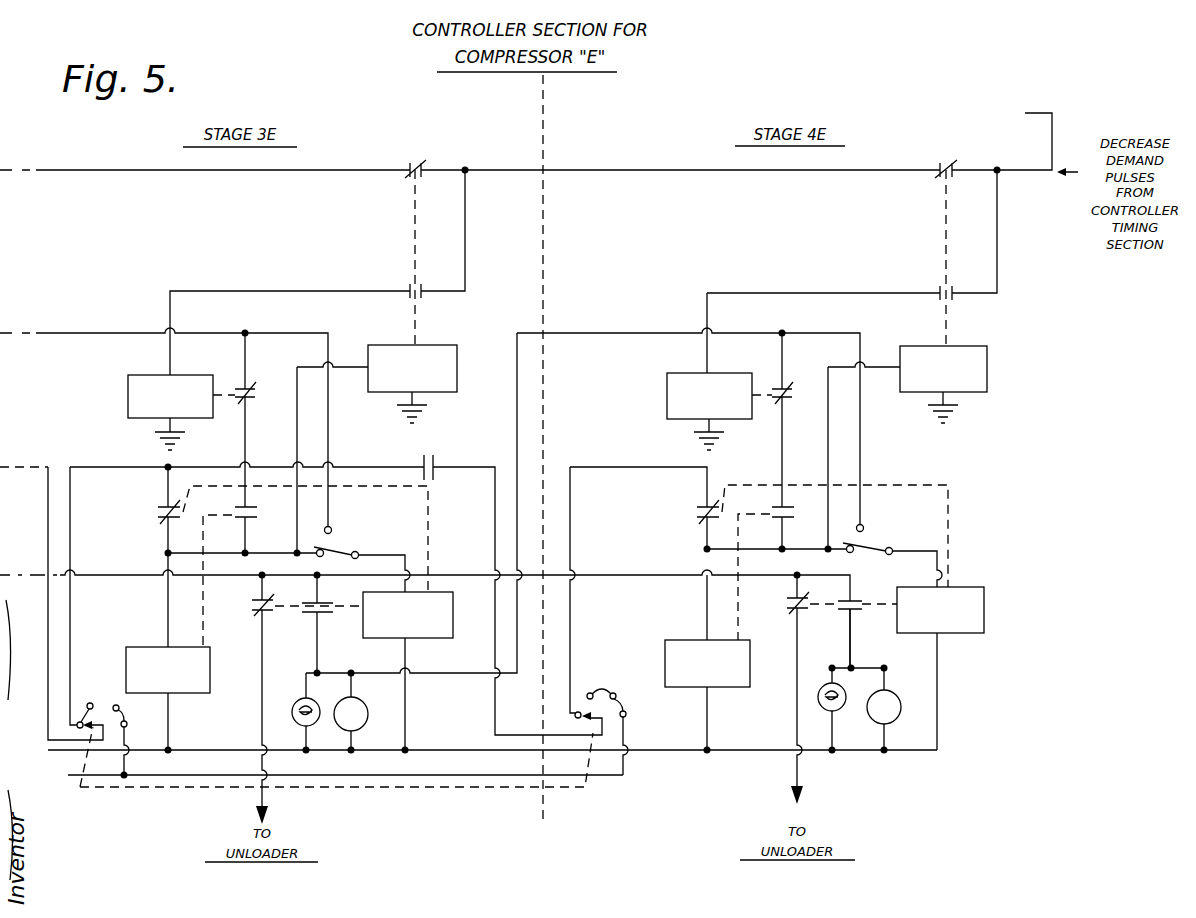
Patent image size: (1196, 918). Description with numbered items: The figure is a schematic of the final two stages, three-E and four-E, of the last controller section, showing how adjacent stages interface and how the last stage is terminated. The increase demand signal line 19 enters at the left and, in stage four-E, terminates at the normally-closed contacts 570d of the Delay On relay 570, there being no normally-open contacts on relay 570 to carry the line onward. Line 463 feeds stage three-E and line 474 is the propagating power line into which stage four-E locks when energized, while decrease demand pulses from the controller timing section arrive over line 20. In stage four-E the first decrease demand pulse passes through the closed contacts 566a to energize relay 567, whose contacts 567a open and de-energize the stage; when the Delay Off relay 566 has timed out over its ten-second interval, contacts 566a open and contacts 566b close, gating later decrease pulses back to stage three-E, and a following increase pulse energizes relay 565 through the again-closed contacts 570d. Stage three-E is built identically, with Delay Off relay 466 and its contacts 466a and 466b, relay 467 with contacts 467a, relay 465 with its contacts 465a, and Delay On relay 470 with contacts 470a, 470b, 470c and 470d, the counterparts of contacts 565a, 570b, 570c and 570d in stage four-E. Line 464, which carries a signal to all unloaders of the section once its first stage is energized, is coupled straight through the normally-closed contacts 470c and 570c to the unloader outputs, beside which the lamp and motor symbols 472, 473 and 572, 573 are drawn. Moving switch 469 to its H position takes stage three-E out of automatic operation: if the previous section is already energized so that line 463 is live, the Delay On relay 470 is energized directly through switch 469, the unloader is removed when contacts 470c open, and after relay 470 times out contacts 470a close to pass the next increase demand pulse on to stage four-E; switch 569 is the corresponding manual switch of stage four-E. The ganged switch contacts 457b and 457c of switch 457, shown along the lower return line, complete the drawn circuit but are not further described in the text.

The increase demand signal line 19 is at (82, 467).
The decrease demand pulse conductor 20 is at (85, 170).
The unloader control switch 457 is at (407, 787).
The switch contacts of unloader control switch 457b is at (102, 692).
The switch contacts of unloader control switch 457c is at (602, 690).
The line 463 is at (63, 333).
The line 464 is at (110, 575).
The relay 465 is at (210, 655).
The relay contacts 465a is at (252, 520).
The Delay Off relay 466 is at (442, 345).
The contacts 466a is at (410, 286).
The contacts 466b is at (418, 165).
The relay 467 is at (138, 375).
The contacts 467a is at (258, 392).
The switch 469 is at (350, 548).
The Delay On relay 470 is at (455, 630).
The contacts 470a is at (436, 467).
The delay on relay contacts 470b is at (322, 616).
The NC contacts 470c is at (258, 608).
The NC contacts 470d is at (163, 508).
The indicator lamp 472 is at (296, 702).
The motor 473 is at (372, 698).
The propagating power line 474 is at (592, 333).
The relay 565 is at (767, 637).
The relay contacts 565a is at (790, 520).
The Delay Off relay 566 is at (988, 368).
The contacts 566a is at (940, 288).
The contacts 566b is at (946, 165).
The relay 567 is at (685, 373).
The contacts 567a is at (792, 392).
The switch 569 is at (889, 536).
The Delay On relay 570 is at (972, 587).
The delay on relay contacts 570b is at (855, 600).
The NC contacts 570c is at (793, 602).
The NC contacts 570d is at (702, 508).
The indicator lamp 572 is at (822, 690).
The motor 573 is at (895, 694).